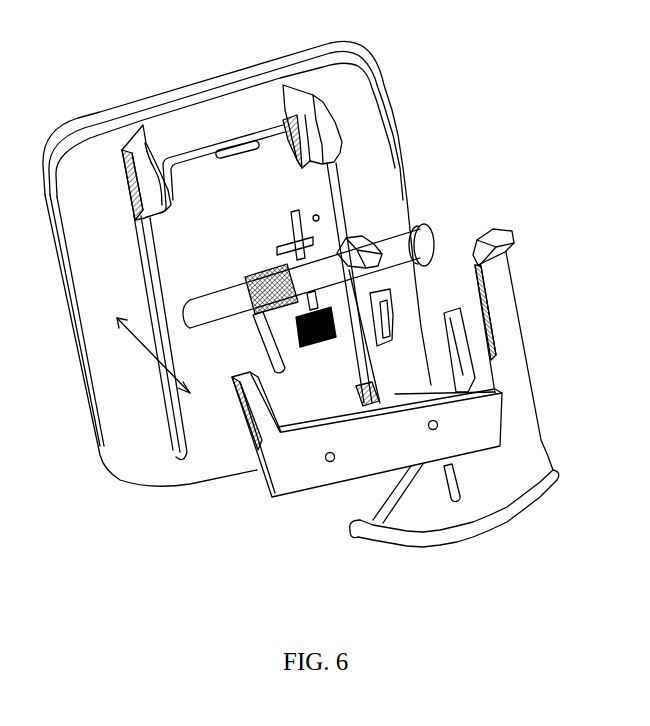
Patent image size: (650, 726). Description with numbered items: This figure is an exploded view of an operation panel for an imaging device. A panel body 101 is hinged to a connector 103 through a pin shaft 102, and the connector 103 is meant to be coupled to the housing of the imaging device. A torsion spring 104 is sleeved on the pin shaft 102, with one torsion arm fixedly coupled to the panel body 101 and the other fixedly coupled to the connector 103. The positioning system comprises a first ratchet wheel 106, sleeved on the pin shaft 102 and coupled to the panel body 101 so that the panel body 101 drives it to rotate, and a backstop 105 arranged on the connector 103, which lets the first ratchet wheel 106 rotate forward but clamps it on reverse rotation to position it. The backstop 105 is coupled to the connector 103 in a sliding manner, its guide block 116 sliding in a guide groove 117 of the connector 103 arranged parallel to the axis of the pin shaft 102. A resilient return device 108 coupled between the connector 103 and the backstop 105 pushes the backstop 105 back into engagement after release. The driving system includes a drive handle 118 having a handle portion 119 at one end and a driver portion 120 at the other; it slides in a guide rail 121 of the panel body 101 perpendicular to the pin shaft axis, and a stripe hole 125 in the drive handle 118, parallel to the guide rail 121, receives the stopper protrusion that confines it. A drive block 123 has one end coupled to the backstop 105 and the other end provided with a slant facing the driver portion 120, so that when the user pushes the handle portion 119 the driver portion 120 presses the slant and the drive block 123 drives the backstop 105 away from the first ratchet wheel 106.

The panel body 101 is at (92, 302).
The pin shaft 102 is at (432, 234).
The connector 103 is at (288, 467).
The torsion spring 104 is at (245, 277).
The backstop 105 is at (364, 240).
The first ratchet wheel 106 is at (308, 143).
The resilient return device 108 is at (301, 346).
The guide block 116 is at (427, 350).
The guide groove 117 is at (395, 394).
The drive handle 118 is at (507, 463).
The handle portion 119 is at (411, 547).
The driver portion 120 is at (513, 236).
The guide rail 121 is at (330, 223).
The drive block 123 is at (390, 293).
The stripe hole 125 is at (460, 497).